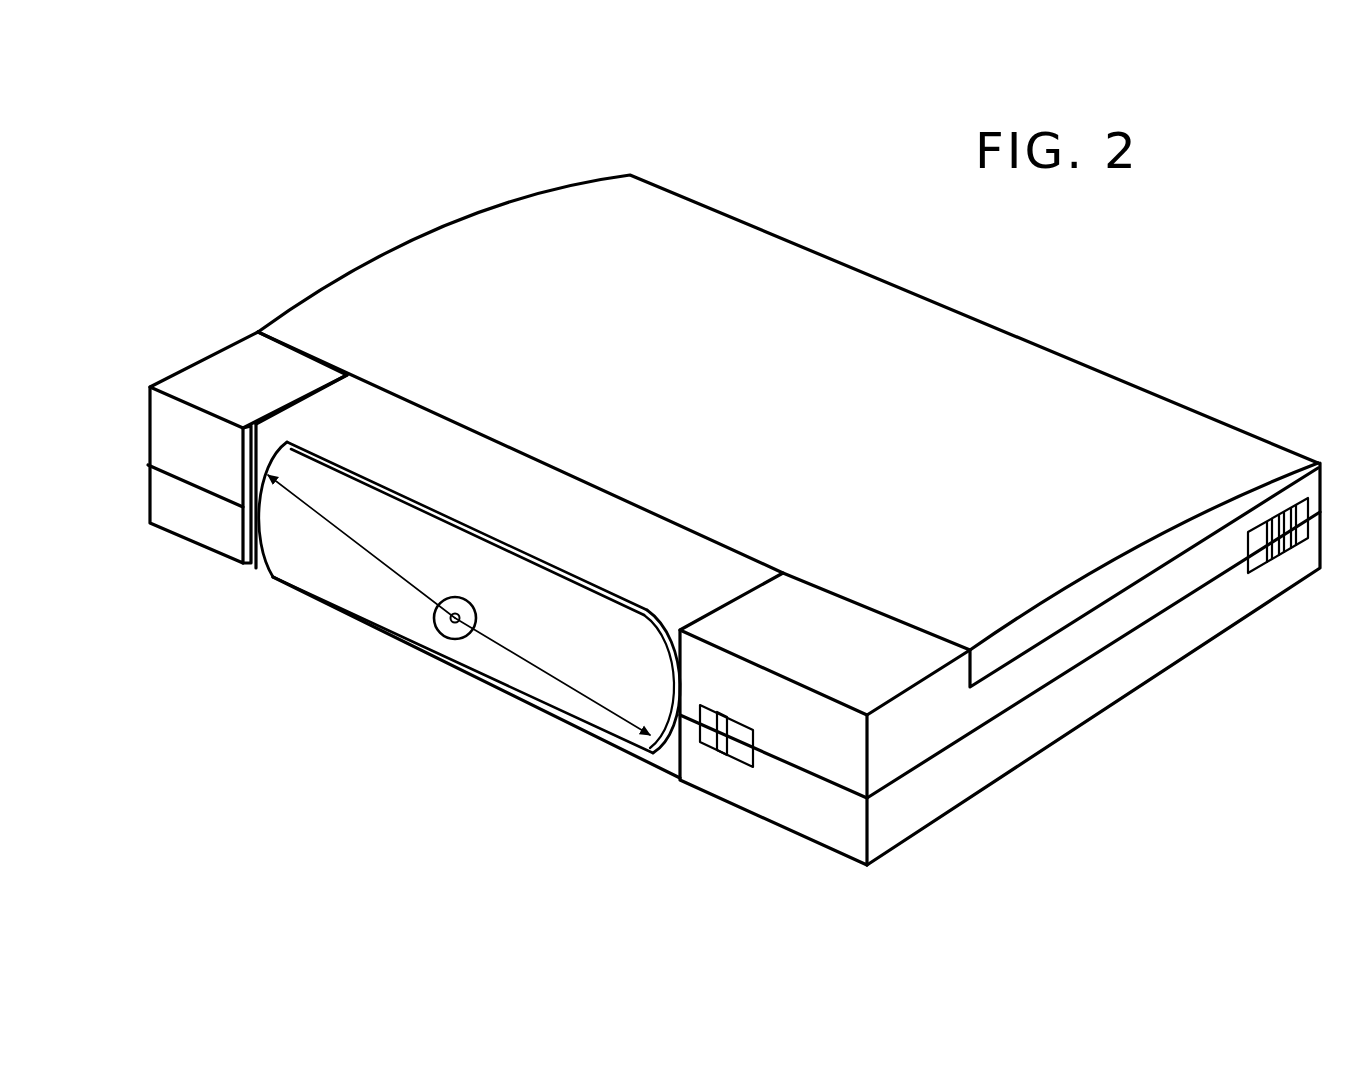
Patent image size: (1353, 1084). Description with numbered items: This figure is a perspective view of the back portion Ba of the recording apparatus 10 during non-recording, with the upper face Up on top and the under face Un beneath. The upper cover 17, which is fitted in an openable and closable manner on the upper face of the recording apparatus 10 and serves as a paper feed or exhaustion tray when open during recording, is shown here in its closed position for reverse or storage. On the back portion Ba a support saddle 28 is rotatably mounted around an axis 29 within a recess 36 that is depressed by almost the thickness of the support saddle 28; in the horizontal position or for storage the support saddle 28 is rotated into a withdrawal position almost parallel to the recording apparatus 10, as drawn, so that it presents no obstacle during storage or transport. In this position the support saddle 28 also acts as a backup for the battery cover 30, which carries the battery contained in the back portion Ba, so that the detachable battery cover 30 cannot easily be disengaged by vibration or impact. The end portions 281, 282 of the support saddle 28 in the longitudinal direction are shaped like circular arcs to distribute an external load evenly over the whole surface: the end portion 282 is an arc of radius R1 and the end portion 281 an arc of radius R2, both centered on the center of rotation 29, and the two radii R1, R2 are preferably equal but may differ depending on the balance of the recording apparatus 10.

The recording apparatus 10 is at (1018, 744).
The upper cover 17 is at (1087, 385).
The support saddle 28 is at (600, 615).
The end portion 281 is at (663, 655).
The end portion 282 is at (265, 540).
The axis 29 is at (445, 636).
The battery cover 30 is at (495, 460).
The recess 36 is at (635, 772).
The radius R1 is at (365, 552).
The radius R2 is at (590, 700).
The back portion Ba is at (660, 768).
The upper face Up is at (432, 228).
The under face Un is at (957, 832).